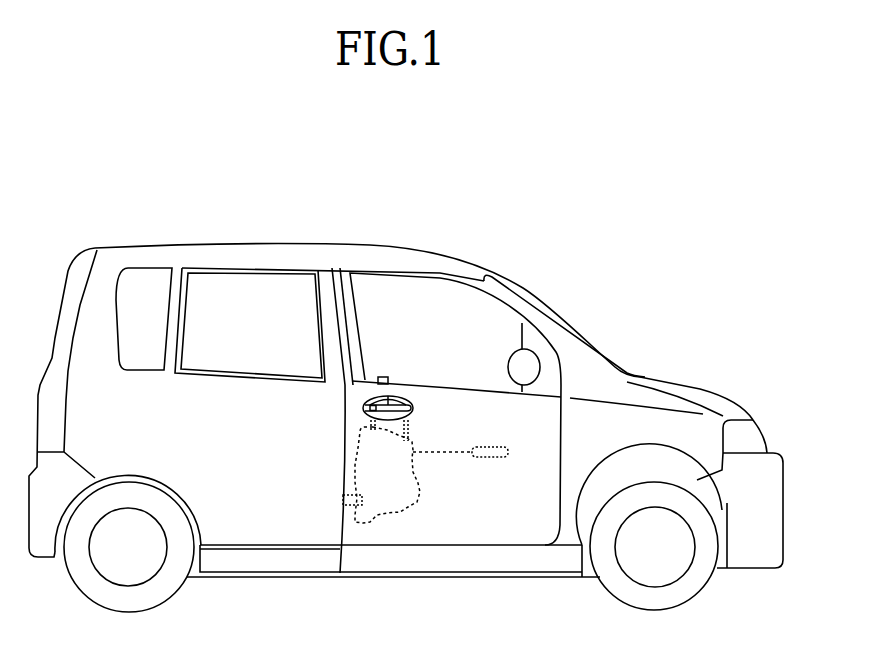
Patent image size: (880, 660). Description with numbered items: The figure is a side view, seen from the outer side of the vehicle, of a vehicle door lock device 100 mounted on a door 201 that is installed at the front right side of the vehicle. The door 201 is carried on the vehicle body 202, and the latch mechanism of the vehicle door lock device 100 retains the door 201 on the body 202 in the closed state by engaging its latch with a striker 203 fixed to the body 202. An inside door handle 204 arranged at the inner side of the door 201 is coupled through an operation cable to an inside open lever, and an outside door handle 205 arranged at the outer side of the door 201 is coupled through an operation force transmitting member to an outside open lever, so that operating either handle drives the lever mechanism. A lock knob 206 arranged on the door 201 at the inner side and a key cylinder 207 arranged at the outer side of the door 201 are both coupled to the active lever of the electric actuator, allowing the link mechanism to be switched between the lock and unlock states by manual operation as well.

The vehicle door lock device 100 is at (418, 438).
The door 201 is at (450, 537).
The body 202 is at (275, 537).
The striker 203 is at (343, 497).
The inside door handle 204 is at (488, 457).
The outside door handle 205 is at (396, 396).
The lock knob 206 is at (381, 377).
The key cylinder 207 is at (365, 408).